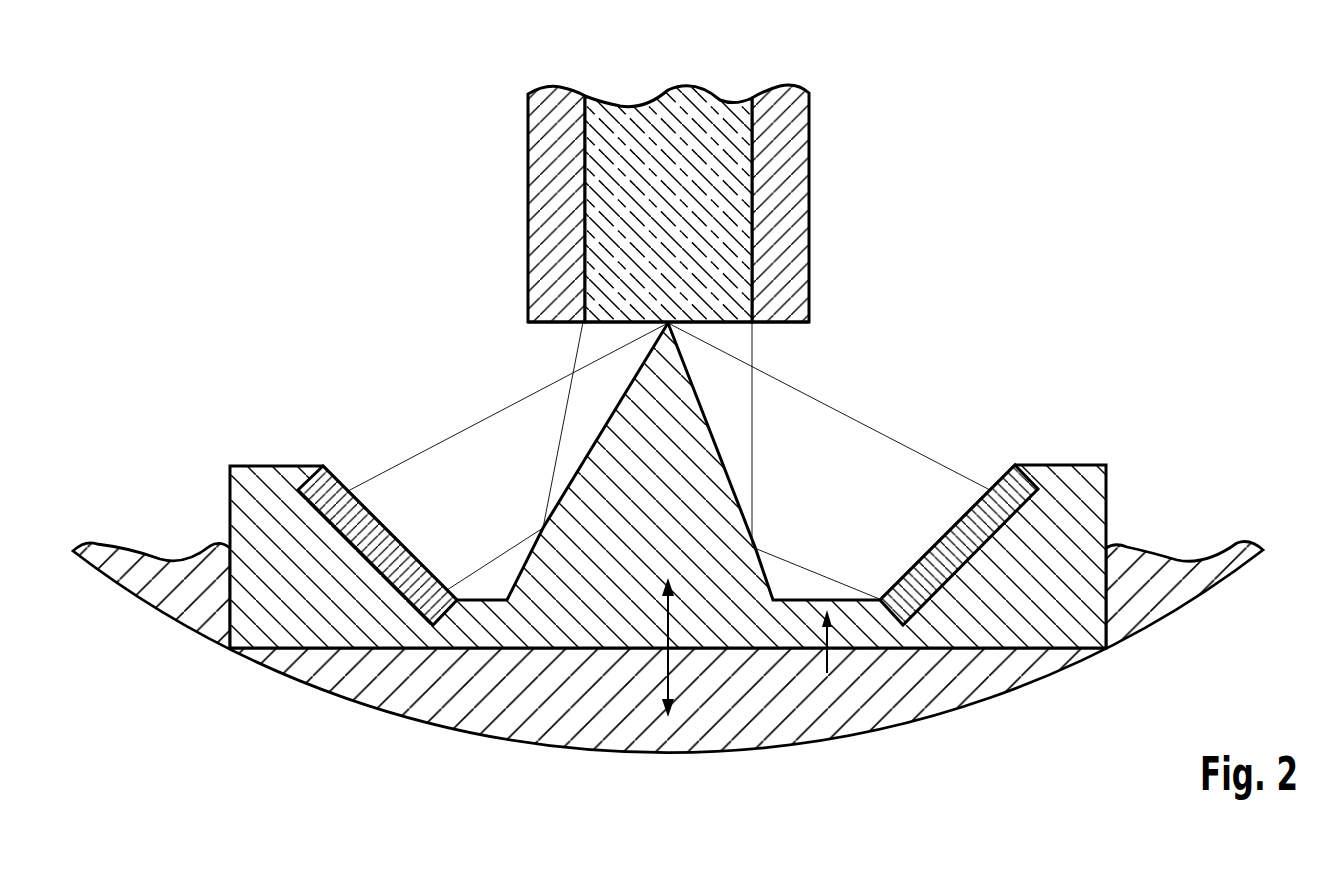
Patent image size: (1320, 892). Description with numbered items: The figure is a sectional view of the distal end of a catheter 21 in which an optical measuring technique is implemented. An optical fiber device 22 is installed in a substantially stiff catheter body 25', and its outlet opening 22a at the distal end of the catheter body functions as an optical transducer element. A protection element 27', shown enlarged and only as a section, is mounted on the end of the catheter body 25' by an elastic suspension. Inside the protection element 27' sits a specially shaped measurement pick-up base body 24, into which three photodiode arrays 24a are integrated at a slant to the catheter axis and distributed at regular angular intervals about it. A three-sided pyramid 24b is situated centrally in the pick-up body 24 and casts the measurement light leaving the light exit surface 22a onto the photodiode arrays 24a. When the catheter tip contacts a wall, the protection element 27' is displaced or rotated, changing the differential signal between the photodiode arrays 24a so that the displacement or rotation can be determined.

The catheter 21 is at (1032, 217).
The optical fiber device 22 is at (728, 215).
The outlet opening / light exit surface 22a is at (720, 327).
The measurement pick-up base body 24 is at (1068, 480).
The photodiode arrays 24a is at (1000, 478).
The three-sided pyramid 24b is at (583, 468).
The catheter body 25' is at (711, 203).
The protection element 27' is at (668, 661).